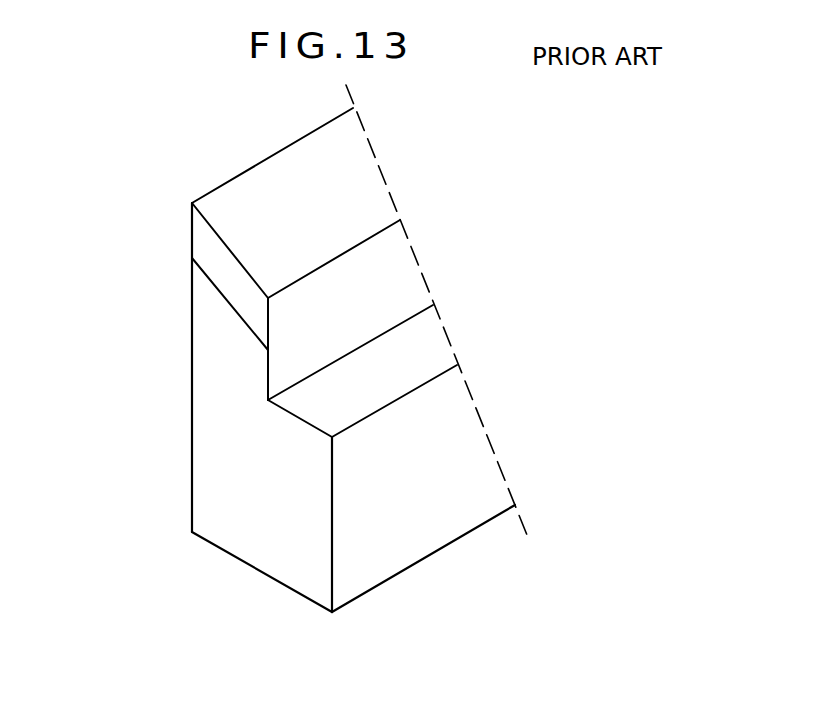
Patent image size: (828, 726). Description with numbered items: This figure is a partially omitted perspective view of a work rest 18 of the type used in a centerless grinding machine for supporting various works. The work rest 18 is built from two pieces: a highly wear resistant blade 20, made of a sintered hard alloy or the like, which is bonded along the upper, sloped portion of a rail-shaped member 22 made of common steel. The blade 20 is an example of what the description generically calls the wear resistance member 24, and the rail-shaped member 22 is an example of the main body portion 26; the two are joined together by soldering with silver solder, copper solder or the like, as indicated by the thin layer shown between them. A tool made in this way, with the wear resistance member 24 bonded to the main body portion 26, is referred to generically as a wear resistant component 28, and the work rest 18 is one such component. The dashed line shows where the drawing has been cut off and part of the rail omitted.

The work rest 18 is at (187, 360).
The wear resistant component 28 is at (286, 407).
The blade 20 is at (218, 258).
The wear resistance member 24 is at (241, 229).
The rail-shaped member 22 is at (241, 498).
The main body portion 26 is at (302, 429).